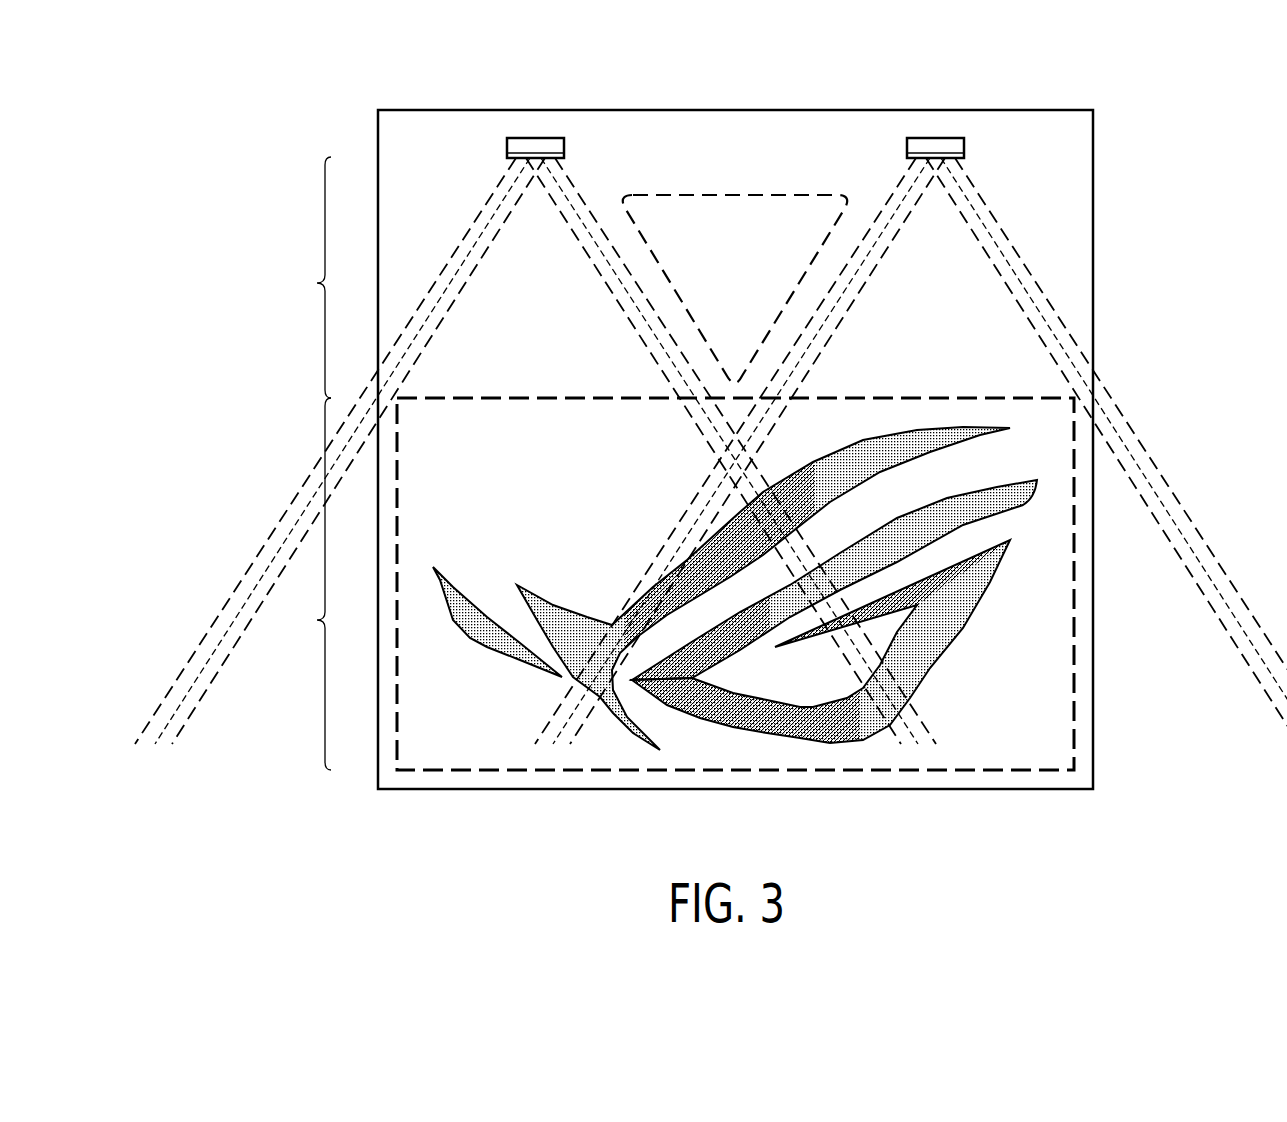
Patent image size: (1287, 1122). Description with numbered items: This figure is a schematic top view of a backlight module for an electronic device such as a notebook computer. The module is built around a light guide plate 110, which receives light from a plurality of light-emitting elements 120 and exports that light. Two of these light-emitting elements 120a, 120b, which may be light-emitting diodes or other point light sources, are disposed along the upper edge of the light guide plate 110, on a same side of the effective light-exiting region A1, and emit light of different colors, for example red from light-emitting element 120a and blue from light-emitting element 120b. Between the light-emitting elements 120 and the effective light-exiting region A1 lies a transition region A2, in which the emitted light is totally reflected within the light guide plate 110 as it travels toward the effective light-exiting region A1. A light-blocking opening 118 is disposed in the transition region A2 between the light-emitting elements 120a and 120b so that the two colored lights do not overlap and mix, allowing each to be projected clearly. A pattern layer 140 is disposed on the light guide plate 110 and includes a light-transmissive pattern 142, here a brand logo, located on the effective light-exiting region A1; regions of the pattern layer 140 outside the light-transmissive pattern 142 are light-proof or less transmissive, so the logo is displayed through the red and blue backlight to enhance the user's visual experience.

The light guide plate 110 is at (1095, 212).
The light-blocking opening 118 is at (729, 195).
The light-emitting elements 120 is at (711, 396).
The light-emitting element 120a is at (537, 150).
The light-emitting element 120b is at (937, 150).
The pattern layer 140 is at (1053, 608).
The light-transmissive pattern 142 is at (955, 652).
The effective light-exiting region A1 is at (306, 584).
The transition region A2 is at (305, 277).